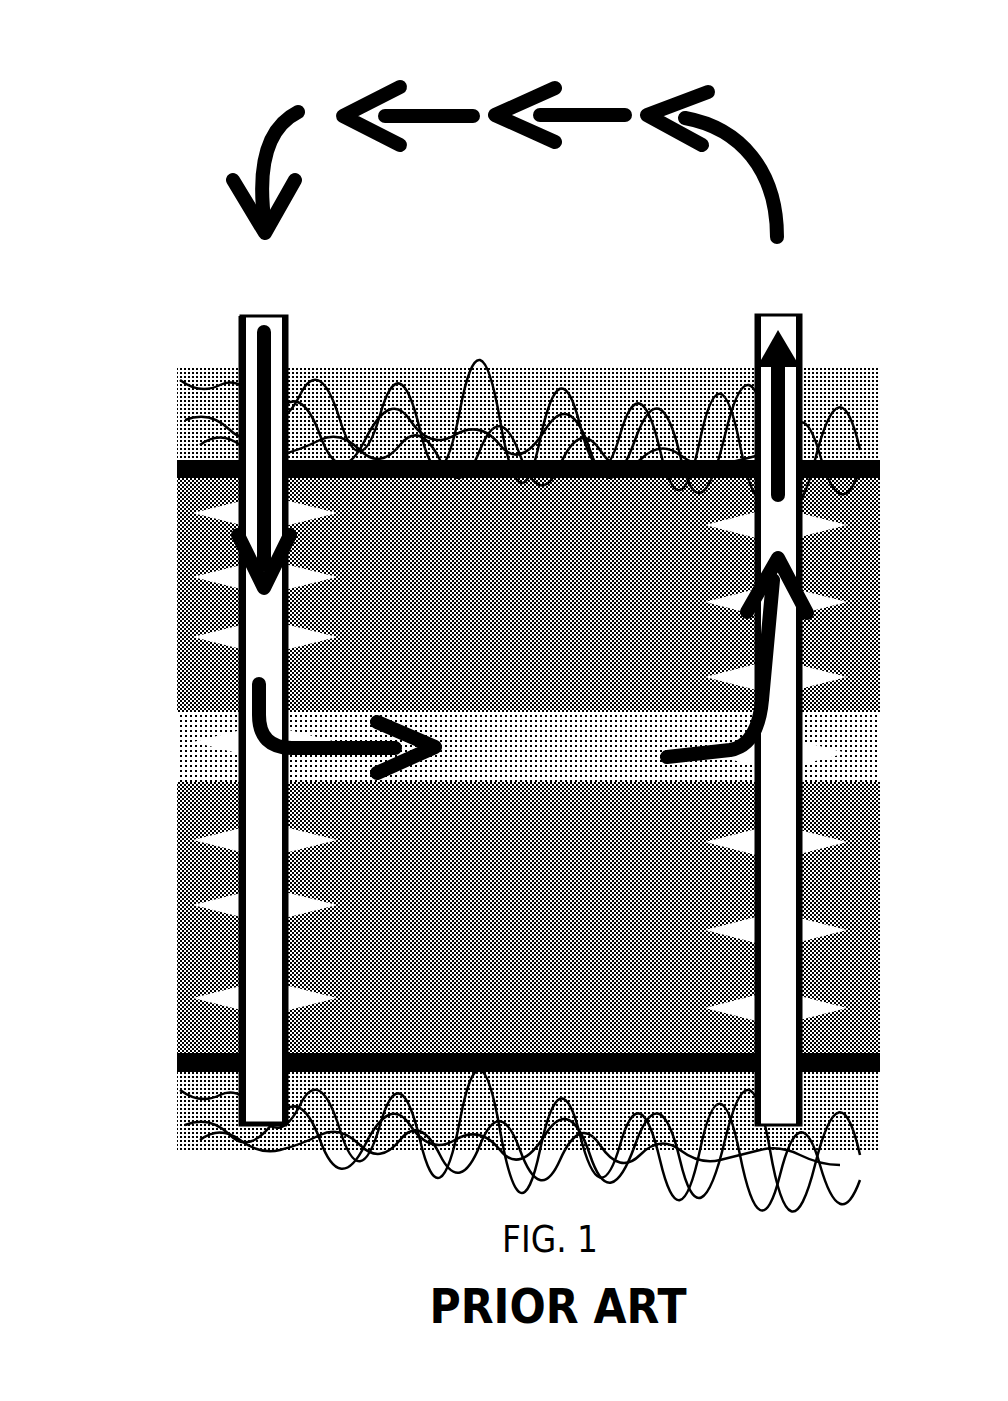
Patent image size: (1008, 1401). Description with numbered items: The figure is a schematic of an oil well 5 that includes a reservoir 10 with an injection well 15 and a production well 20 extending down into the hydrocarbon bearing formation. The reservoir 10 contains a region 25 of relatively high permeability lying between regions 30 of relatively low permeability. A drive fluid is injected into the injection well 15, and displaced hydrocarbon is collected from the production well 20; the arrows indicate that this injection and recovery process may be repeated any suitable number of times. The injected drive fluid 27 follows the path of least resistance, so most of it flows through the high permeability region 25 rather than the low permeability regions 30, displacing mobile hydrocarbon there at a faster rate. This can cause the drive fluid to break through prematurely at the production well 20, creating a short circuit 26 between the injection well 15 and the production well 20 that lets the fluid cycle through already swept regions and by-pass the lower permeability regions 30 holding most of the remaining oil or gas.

The oil well 5 is at (147, 173).
The reservoir 10 is at (454, 786).
The injection well 15 is at (263, 345).
The production well 20 is at (778, 315).
The region of relatively high permeability 25 is at (528, 747).
The short circuit 26 is at (602, 748).
The injected drive fluid 27 is at (485, 722).
The region of relatively low permeability 30 is at (528, 765).